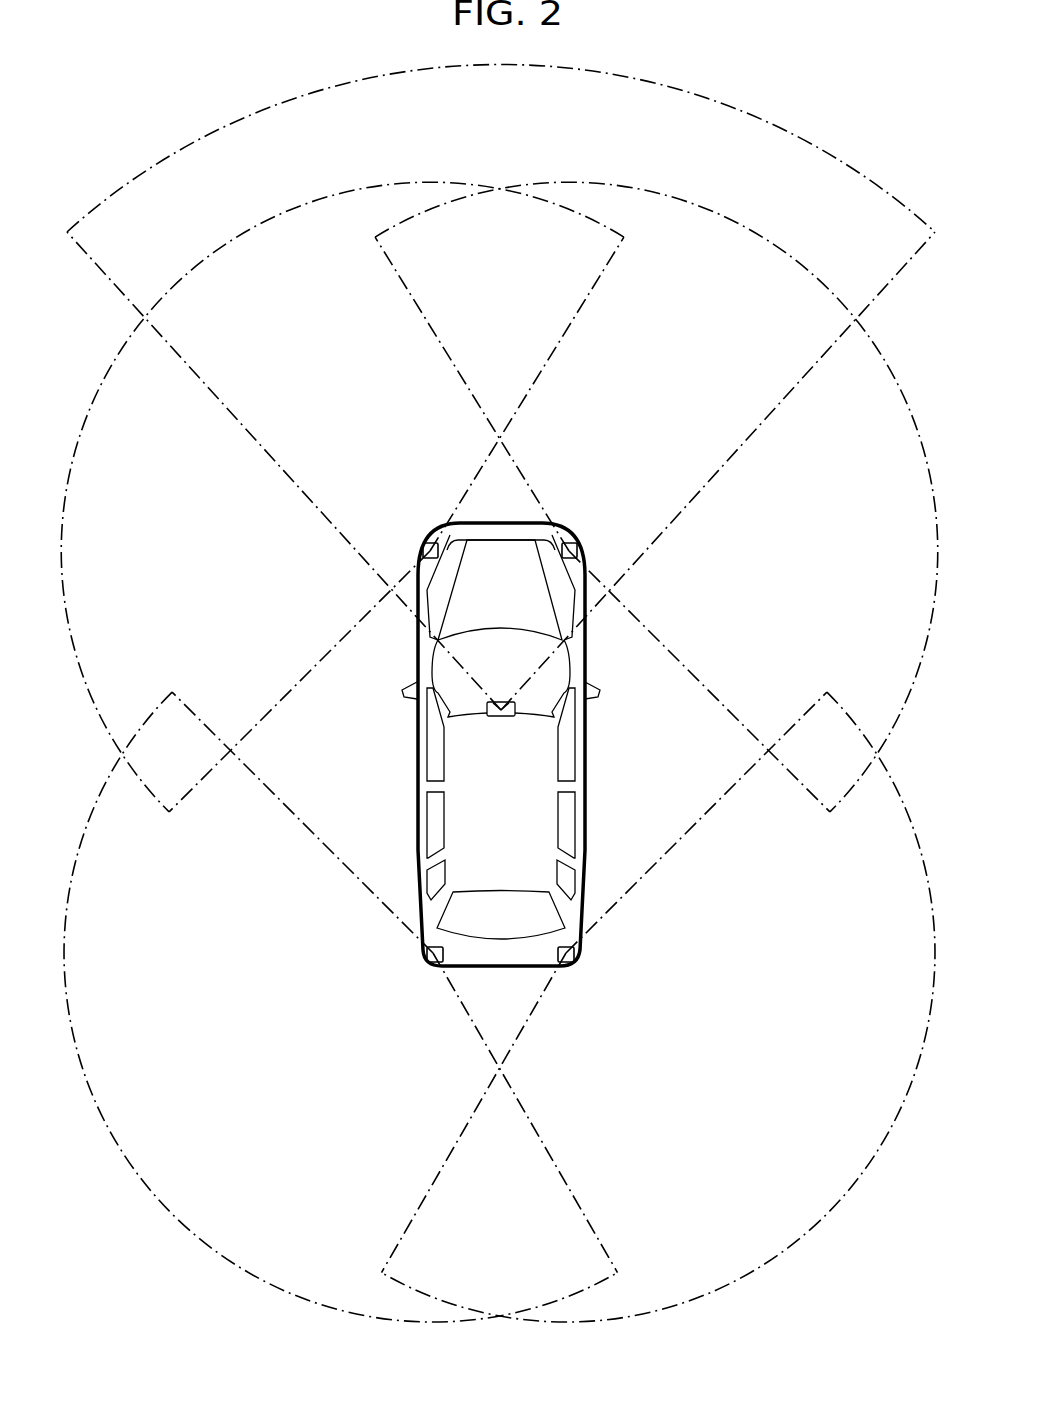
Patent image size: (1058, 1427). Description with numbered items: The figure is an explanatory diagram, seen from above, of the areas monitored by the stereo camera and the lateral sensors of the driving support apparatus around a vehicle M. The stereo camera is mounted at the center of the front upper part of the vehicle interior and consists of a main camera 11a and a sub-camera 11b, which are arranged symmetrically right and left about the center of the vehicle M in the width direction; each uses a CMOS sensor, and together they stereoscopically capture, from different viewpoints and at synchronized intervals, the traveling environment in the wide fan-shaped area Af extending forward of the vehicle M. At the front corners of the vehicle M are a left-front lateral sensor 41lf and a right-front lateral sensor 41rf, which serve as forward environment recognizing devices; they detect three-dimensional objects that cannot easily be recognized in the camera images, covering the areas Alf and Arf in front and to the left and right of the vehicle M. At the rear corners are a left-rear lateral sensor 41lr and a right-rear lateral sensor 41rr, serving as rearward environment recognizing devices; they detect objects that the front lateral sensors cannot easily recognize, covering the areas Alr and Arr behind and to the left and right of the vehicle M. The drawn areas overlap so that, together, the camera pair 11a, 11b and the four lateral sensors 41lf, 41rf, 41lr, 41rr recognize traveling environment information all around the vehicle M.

The area in front of the vehicle Af is at (250, 117).
The area in front and to the left of the vehicle Alf is at (112, 367).
The area in front and to the right of the vehicle Arf is at (888, 362).
The area behind and to the left of the vehicle Alr is at (140, 1180).
The area behind and to the right of the vehicle Arr is at (857, 1182).
The vehicle M is at (415, 768).
The main camera 11a is at (498, 737).
The sub-camera 11b is at (502, 717).
The left-front lateral sensor 41lf is at (433, 543).
The right-front lateral sensor 41rf is at (567, 543).
The left-rear lateral sensor 41lr is at (435, 963).
The right-rear lateral sensor 41rr is at (565, 963).